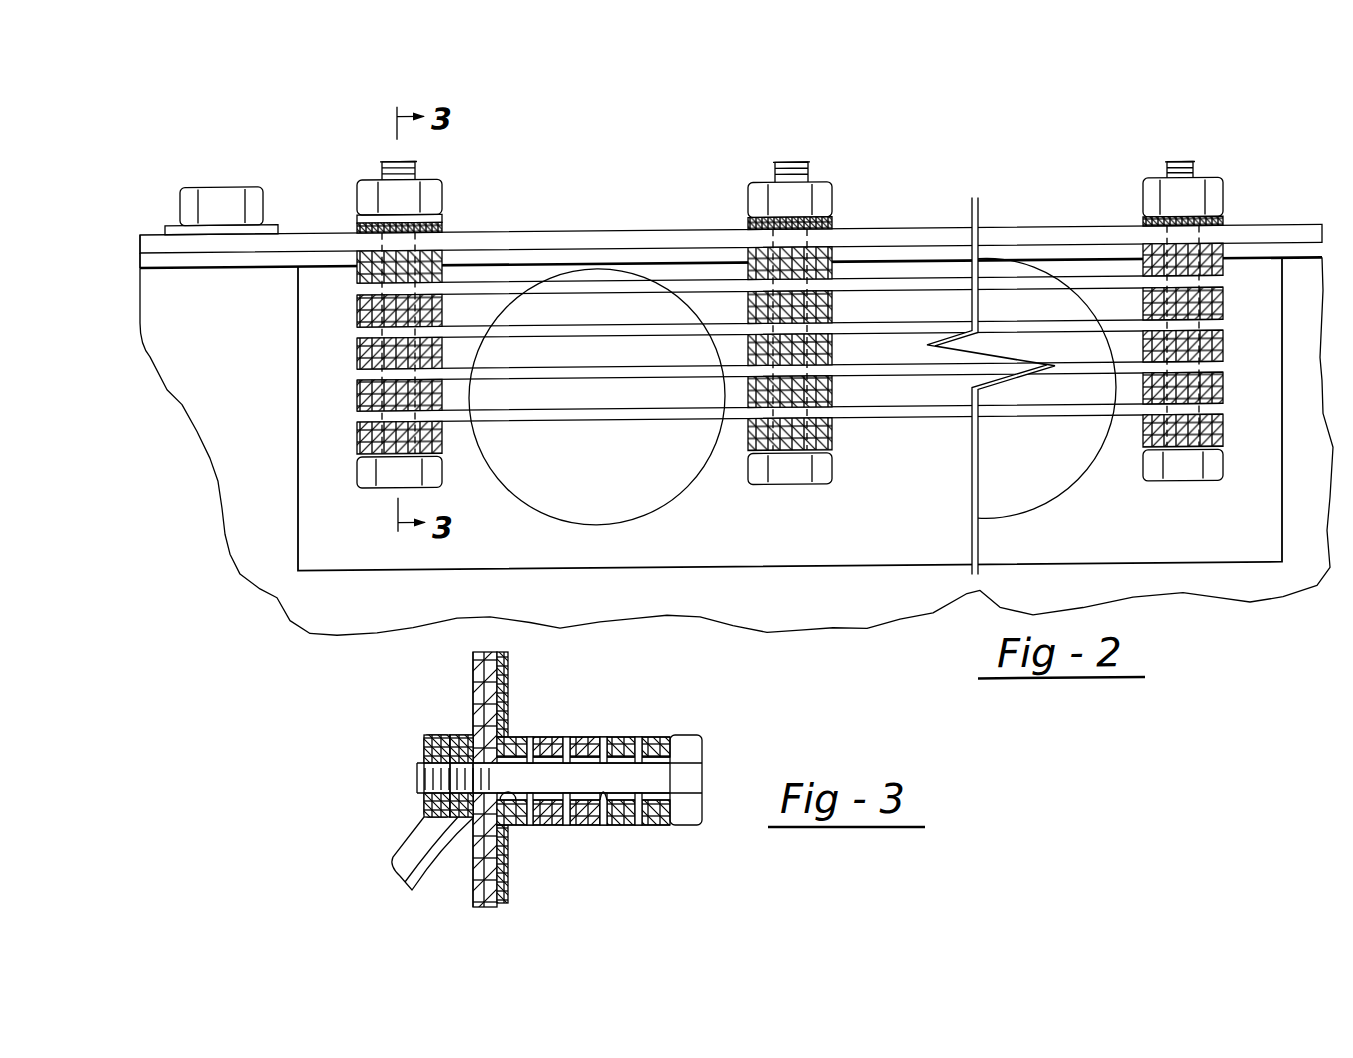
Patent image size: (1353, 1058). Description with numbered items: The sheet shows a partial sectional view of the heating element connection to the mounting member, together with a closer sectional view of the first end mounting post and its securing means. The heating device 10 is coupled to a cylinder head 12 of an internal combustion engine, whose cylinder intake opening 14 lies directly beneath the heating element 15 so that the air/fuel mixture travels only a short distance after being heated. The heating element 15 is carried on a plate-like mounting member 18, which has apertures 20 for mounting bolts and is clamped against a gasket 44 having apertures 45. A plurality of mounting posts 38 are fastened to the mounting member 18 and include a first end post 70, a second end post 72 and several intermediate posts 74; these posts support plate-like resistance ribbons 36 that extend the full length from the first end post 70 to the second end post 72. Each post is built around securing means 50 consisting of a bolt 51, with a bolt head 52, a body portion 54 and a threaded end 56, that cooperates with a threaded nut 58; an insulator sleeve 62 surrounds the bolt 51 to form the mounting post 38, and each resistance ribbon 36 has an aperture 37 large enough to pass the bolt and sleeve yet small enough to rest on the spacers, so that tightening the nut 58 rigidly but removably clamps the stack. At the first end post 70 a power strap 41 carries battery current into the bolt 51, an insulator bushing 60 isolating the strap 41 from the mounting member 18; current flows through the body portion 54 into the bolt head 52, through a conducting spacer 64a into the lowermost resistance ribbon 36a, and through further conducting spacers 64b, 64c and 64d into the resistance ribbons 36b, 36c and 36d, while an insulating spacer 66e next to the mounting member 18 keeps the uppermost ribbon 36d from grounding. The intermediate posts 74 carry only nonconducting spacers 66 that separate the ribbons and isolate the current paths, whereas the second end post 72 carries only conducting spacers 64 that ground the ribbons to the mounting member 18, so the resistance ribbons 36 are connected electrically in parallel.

In FIG. 2, the heating device 10 is at (731, 172).
In FIG. 2, the cylinder head 12 is at (258, 561).
In FIG. 2, the cylinder intake opening 14 is at (597, 529).
In FIG. 2, the heating element 15 is at (846, 546).
In FIG. 2, the mounting member 18 is at (1253, 236).
In FIG. 3, the mounting member 18 is at (465, 800).
In FIG. 3, the aperture 20 is at (508, 802).
In FIG. 2, the resistance ribbon 36 is at (790, 346).
In FIG. 3, the resistance ribbon 36 is at (604, 775).
In FIG. 2, the lowermost resistance ribbon 36a is at (548, 420).
In FIG. 2, the resistance ribbon 36b is at (583, 378).
In FIG. 2, the resistance ribbon 36c is at (565, 334).
In FIG. 2, the uppermost resistance ribbon 36d is at (590, 292).
In FIG. 3, the aperture 37 is at (606, 792).
In FIG. 2, the mounting post 38 is at (581, 272).
In FIG. 2, the power strap 41 is at (445, 229).
In FIG. 3, the power strap 41 is at (418, 834).
In FIG. 2, the gasket 44 is at (182, 262).
In FIG. 3, the gasket 44 is at (503, 884).
In FIG. 3, the aperture 45 is at (471, 887).
In FIG. 2, the securing means 50 is at (556, 272).
In FIG. 2, the bolt 51 is at (451, 190).
In FIG. 3, the bolt 51 is at (415, 776).
In FIG. 2, the bolt head 52 is at (431, 476).
In FIG. 3, the bolt head 52 is at (688, 745).
In FIG. 3, the body portion 54 is at (572, 779).
In FIG. 2, the threaded end 56 is at (359, 284).
In FIG. 3, the threaded end 56 is at (497, 814).
In FIG. 2, the threaded nut 58 is at (368, 201).
In FIG. 3, the threaded nut 58 is at (437, 733).
In FIG. 2, the insulator bushing 60 is at (445, 237).
In FIG. 3, the insulator bushing 60 is at (470, 733).
In FIG. 3, the insulator sleeve 62 is at (616, 736).
In FIG. 2, the conducting spacer 64 is at (1215, 425).
In FIG. 2, the conducting spacer 64a is at (367, 450).
In FIG. 3, the conducting spacer 64a is at (651, 736).
In FIG. 2, the conducting spacer 64b is at (362, 403).
In FIG. 2, the conducting spacer 64c is at (362, 356).
In FIG. 2, the conducting spacer 64d is at (362, 314).
In FIG. 2, the nonconducting spacer 66 is at (834, 447).
In FIG. 3, the nonconducting spacer 66 is at (524, 756).
In FIG. 2, the insulating spacer 66e is at (360, 274).
In FIG. 2, the first end post 70 is at (575, 272).
In FIG. 3, the first end post 70 is at (485, 764).
In FIG. 2, the second end post 72 is at (1199, 151).
In FIG. 2, the intermediate post 74 is at (774, 155).